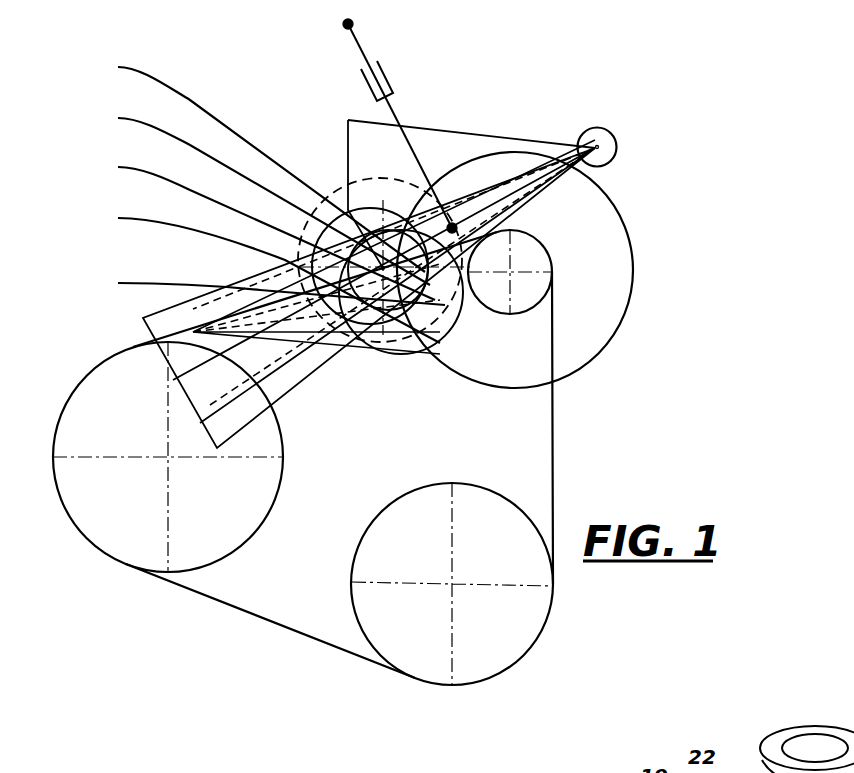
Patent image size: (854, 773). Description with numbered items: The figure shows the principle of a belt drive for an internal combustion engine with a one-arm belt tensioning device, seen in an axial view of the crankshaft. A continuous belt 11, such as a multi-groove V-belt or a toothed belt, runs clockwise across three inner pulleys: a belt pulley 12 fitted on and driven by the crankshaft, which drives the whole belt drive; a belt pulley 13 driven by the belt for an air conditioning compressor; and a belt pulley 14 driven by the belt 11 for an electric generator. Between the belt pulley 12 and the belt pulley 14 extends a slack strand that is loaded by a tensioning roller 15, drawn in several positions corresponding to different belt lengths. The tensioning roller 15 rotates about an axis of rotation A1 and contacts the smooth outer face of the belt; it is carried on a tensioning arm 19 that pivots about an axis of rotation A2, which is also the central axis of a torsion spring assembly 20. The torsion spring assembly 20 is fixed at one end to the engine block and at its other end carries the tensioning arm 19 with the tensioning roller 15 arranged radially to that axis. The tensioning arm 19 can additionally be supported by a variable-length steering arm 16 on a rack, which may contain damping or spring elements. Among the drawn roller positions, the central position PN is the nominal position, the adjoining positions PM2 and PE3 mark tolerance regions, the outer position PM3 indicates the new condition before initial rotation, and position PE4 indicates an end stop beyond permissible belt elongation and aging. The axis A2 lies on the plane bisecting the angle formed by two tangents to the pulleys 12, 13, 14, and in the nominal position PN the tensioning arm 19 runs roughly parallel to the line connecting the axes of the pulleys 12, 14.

The continuous belt 11 is at (242, 612).
The belt pulley 12 is at (108, 560).
The belt pulley 13 is at (386, 665).
The belt pulley 14 is at (497, 313).
The tensioning roller 15 is at (335, 178).
The steering arm 16 is at (398, 115).
The tensioning arm 19 is at (490, 200).
The torsion spring assembly 20 is at (612, 132).
The axis of rotation A1 is at (383, 266).
The axis of rotation A2 is at (597, 127).
The outer position PM3 is at (240, 165).
The adjoining position PM2 is at (243, 197).
The nominal position PN is at (254, 229).
The adjoining position PE3 is at (251, 276).
The end stop position PE4 is at (253, 289).